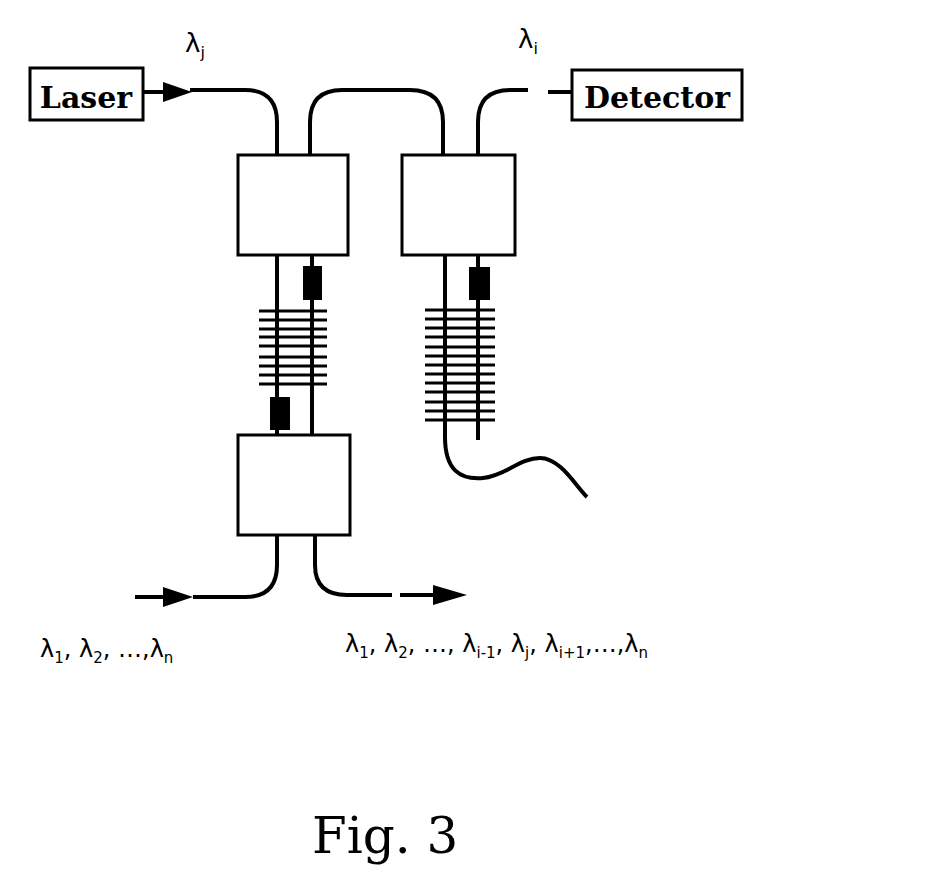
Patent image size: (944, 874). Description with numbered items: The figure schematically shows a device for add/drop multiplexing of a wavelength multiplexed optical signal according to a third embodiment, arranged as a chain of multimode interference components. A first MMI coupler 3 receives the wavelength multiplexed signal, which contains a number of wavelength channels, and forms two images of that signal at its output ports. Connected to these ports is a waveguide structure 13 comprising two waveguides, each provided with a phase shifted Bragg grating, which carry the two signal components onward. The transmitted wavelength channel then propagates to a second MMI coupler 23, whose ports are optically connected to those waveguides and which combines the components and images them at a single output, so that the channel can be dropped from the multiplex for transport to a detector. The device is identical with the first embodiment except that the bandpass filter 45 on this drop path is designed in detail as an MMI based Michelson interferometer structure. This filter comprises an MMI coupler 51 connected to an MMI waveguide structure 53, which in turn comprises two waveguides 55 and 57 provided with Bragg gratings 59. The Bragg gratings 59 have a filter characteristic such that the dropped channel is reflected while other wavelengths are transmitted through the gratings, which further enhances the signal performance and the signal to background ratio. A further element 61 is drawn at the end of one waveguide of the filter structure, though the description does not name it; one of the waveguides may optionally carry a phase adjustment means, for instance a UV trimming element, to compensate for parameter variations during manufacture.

The first MMI coupler 3 is at (238, 478).
The waveguide structure 13 is at (218, 258).
The second MMI coupler 23 is at (238, 178).
The bandpass filter 45 is at (653, 332).
The MMI coupler 51 is at (515, 183).
The MMI waveguide structure 53 is at (598, 389).
The waveguide 55 is at (535, 389).
The waveguide 57 is at (478, 430).
The Bragg gratings 59 is at (531, 367).
The absorber 61 is at (490, 272).